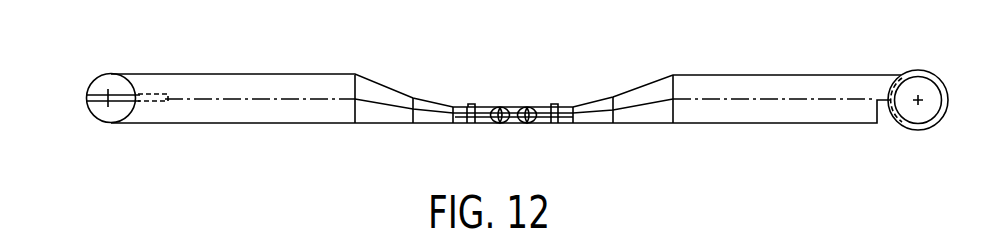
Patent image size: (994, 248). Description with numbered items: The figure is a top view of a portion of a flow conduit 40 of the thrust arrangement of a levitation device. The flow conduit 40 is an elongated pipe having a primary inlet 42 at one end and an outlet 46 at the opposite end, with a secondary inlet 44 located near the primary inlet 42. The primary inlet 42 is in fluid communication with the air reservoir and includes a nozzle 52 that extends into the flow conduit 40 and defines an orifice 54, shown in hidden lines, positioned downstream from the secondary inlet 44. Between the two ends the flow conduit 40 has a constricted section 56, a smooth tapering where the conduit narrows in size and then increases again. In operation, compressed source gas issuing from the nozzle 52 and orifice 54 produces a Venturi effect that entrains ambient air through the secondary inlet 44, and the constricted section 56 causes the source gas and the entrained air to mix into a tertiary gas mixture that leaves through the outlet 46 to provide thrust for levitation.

The flow conduit 40 is at (282, 82).
The primary inlet 42 is at (88, 98).
The secondary inlet 44 is at (107, 82).
The outlet 46 is at (913, 128).
The nozzle 52 is at (140, 96).
The orifice 54 is at (165, 102).
The constricted section 56 is at (427, 112).